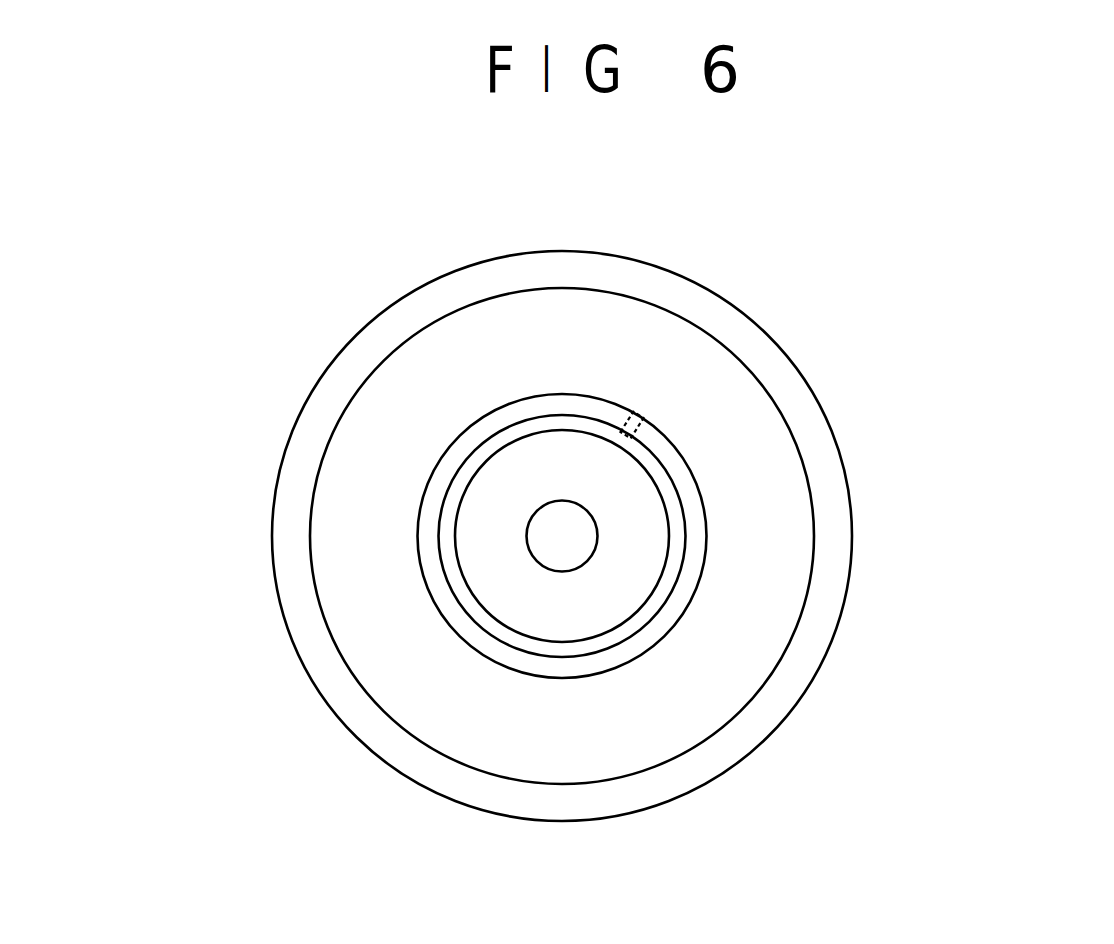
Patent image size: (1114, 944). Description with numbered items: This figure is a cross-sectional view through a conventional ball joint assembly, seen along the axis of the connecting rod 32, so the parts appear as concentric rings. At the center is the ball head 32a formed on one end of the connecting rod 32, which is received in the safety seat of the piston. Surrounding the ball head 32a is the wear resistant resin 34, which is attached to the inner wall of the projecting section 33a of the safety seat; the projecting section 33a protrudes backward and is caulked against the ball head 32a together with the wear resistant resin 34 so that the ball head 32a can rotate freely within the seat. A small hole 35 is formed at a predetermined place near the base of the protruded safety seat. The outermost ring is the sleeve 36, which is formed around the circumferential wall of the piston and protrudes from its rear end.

The connecting rod 32 is at (538, 542).
The ball head 32a is at (529, 609).
The projecting section 33a is at (706, 493).
The wear resistant resin 34 is at (688, 563).
The hole 35 is at (637, 420).
The sleeve 36 is at (635, 280).